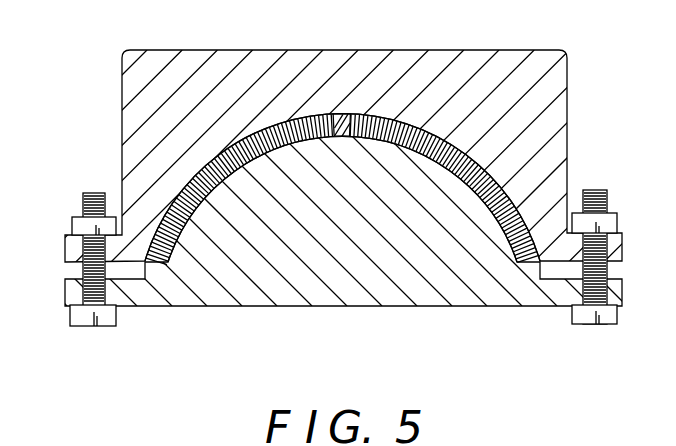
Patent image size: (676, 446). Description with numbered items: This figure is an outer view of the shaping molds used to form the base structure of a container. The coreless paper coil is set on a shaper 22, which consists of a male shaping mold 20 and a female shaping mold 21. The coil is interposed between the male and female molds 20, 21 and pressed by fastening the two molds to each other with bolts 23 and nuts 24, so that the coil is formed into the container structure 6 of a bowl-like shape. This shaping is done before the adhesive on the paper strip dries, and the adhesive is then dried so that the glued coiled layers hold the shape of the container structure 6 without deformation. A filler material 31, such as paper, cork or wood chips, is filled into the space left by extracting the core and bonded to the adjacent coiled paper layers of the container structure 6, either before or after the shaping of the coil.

The shaper 22 is at (338, 201).
The female shaping mold 21 is at (495, 70).
The male shaping mold 20 is at (355, 290).
The container structure 6 is at (483, 169).
The filler material 31 is at (342, 114).
The nut 24 is at (72, 216).
The bolt 23 is at (88, 327).